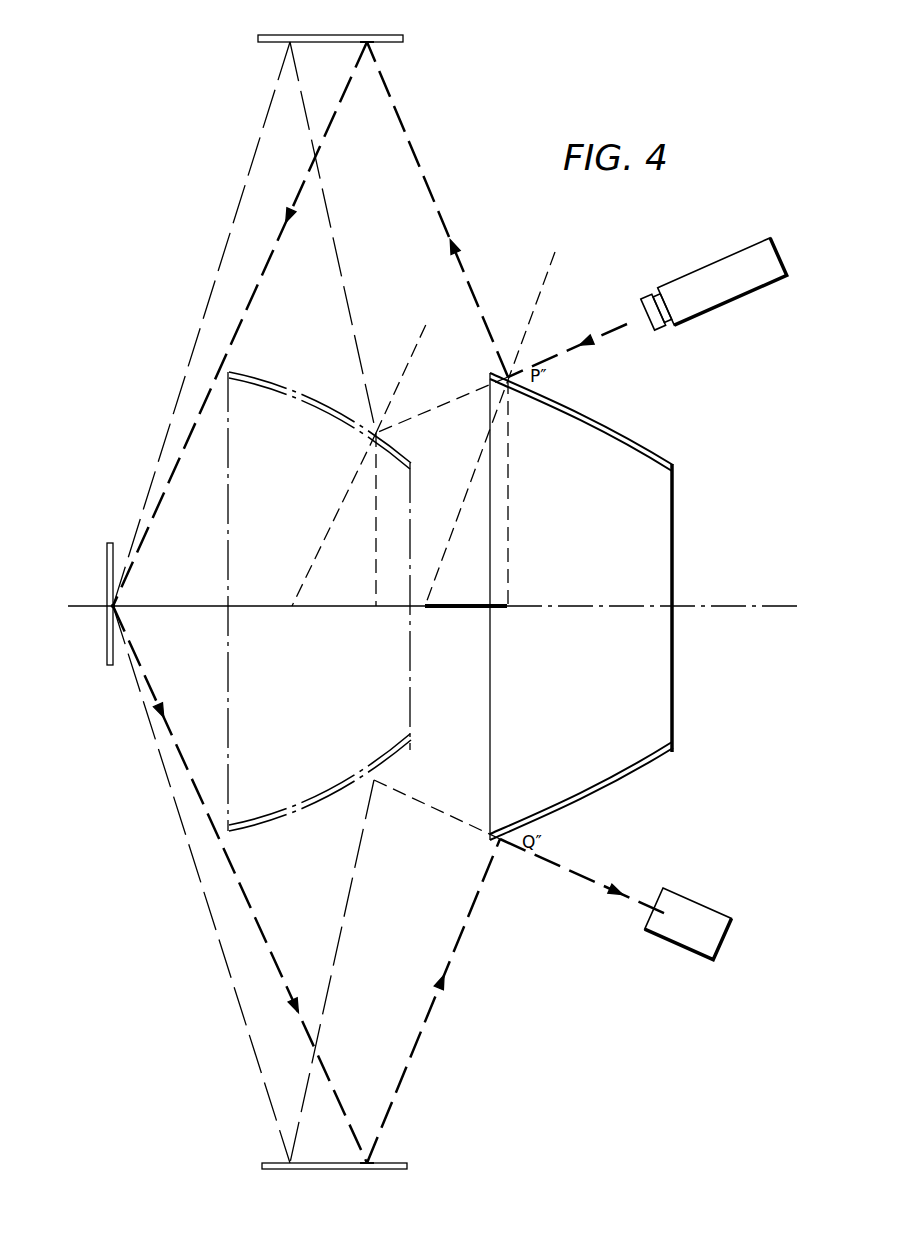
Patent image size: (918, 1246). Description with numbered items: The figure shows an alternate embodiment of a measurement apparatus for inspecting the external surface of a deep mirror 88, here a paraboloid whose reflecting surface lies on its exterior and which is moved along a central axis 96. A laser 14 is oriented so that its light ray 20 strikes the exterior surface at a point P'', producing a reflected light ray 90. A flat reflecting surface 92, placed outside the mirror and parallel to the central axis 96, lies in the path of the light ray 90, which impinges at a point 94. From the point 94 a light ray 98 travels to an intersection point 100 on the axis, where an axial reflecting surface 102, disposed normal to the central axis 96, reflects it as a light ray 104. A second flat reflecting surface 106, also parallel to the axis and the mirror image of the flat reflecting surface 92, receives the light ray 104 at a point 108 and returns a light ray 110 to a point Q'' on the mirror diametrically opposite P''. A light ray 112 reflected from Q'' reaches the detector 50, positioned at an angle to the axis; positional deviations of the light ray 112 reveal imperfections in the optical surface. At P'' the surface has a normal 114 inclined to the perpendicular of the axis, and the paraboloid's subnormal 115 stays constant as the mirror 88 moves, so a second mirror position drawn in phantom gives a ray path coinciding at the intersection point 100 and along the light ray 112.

The laser 14 is at (698, 268).
The light ray 20 is at (590, 332).
The detector 50 is at (700, 905).
The deep mirror 88 is at (630, 782).
The reflected light ray 90 is at (432, 178).
The flat reflecting surface 92 is at (406, 40).
The point 94 is at (367, 40).
The central axis 96 is at (694, 607).
The light ray 98 is at (326, 131).
The intersection point 100 is at (118, 607).
The axial reflecting surface 102 is at (108, 542).
The light ray 104 is at (165, 700).
The flat reflecting surface 106 is at (408, 1166).
The point 108 is at (368, 1166).
The light ray 110 is at (462, 940).
The light ray 112 is at (578, 872).
The normal 114 is at (474, 472).
The subnormal 115 is at (476, 611).